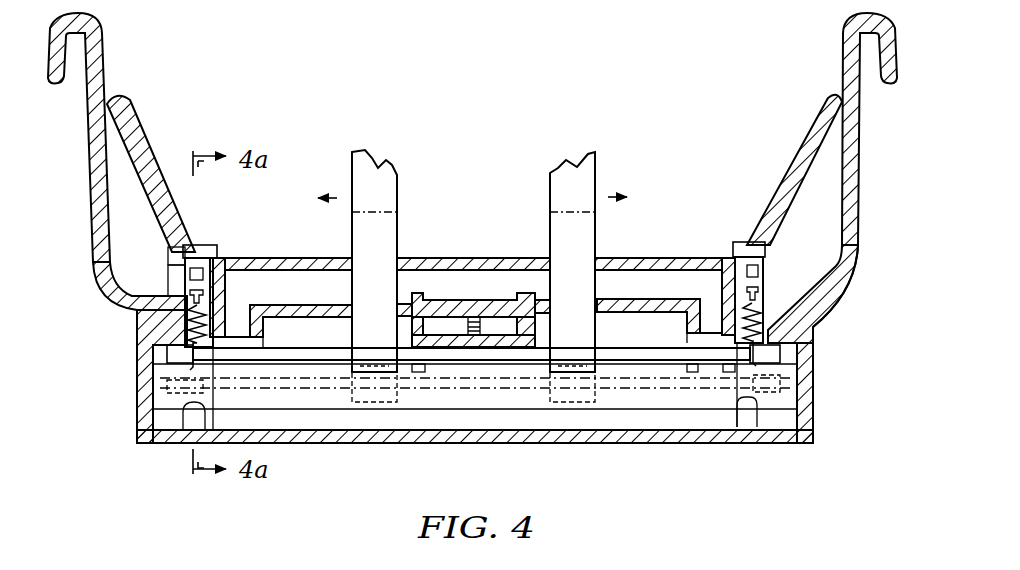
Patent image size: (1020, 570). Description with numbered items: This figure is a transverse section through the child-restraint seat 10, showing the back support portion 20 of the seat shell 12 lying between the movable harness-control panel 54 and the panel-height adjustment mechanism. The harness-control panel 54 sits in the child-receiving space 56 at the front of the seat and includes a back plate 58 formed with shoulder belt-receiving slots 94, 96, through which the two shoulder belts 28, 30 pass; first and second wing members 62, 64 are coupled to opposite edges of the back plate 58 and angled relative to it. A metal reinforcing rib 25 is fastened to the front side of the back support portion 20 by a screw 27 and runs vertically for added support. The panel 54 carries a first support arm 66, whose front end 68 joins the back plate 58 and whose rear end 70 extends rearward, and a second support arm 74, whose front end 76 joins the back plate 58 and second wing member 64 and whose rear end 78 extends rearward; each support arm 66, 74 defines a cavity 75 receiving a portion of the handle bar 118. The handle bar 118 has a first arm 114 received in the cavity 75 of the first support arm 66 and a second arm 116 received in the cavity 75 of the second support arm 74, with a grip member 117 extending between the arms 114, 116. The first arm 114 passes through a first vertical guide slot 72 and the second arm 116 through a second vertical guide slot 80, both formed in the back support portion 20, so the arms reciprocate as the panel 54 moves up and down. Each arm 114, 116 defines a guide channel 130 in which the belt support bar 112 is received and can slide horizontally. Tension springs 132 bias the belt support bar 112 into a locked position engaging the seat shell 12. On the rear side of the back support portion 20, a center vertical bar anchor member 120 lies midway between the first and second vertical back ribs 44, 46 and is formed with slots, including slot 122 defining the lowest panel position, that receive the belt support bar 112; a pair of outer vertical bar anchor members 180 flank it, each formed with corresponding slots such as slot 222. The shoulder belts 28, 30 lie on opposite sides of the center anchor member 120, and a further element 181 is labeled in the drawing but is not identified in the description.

The child-restraint seat 10 is at (641, 84).
The seat shell 12 is at (107, 48).
The back support portion 20 is at (305, 294).
The metal reinforcing rib 25 is at (480, 292).
The screw 27 is at (458, 312).
The shoulder belt 28 is at (375, 175).
The shoulder belt 30 is at (572, 172).
The first vertical back rib 44 is at (137, 398).
The second vertical back rib 46 is at (813, 363).
The harness-control panel 54 is at (166, 158).
The child-receiving space 56 is at (699, 119).
The back plate 58 is at (442, 258).
The first wing member 62 is at (130, 112).
The second wing member 64 is at (803, 132).
The first support arm 66 is at (168, 258).
The front end 68 is at (168, 242).
The rear end 70 is at (228, 262).
The first vertical guide slot 72 is at (183, 335).
The second support arm 74 is at (850, 243).
The cavity 75 is at (187, 273).
The front end 76 is at (787, 228).
The rear end 78 is at (847, 287).
The second vertical guide slot 80 is at (812, 340).
The shoulder belt-receiving slot 94 is at (350, 258).
The shoulder belt-receiving slot 96 is at (598, 258).
The belt support bar 112 is at (610, 336).
The first arm 114 is at (193, 258).
The second arm 116 is at (753, 243).
The grip member 117 is at (490, 442).
The handle bar 118 is at (316, 447).
The center vertical bar anchor member 120 is at (500, 312).
The slot 122 is at (457, 347).
The guide channel 130 is at (187, 428).
The tension spring 132 is at (137, 312).
The outer vertical bar anchor member 180 is at (238, 326).
The right bracket 181 is at (217, 253).
The slot 222 is at (263, 348).